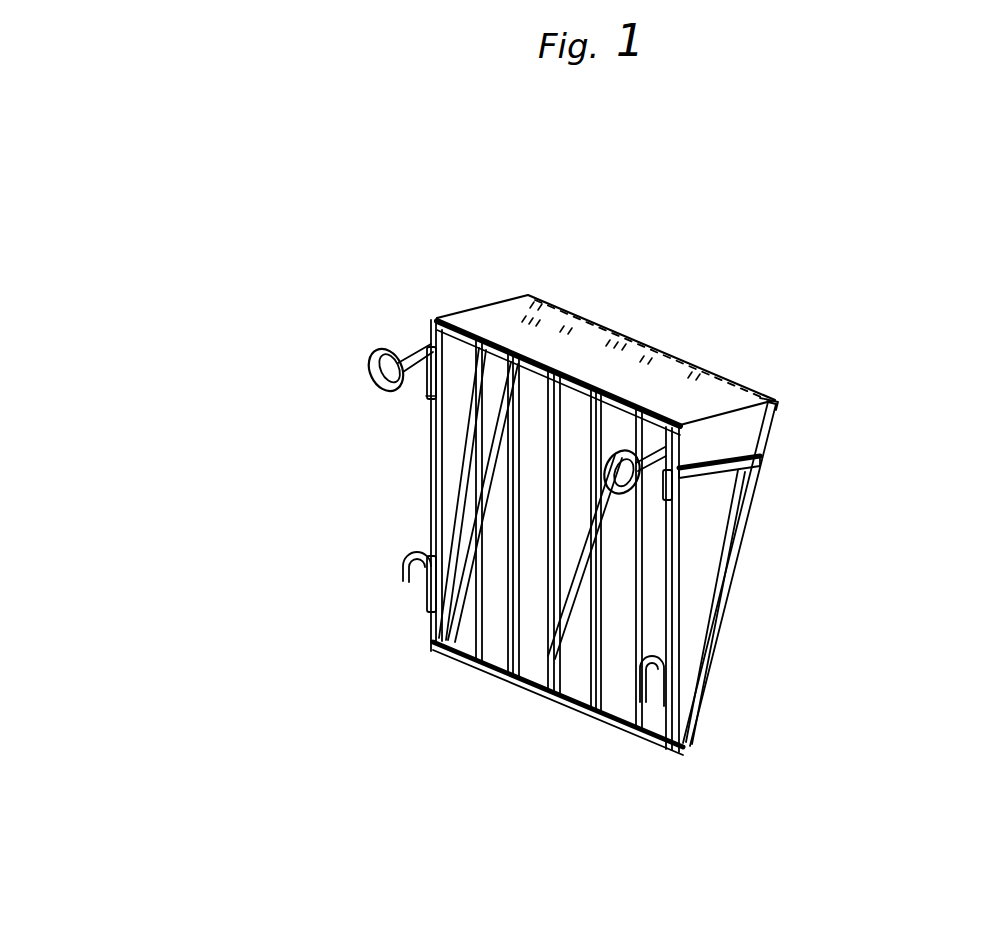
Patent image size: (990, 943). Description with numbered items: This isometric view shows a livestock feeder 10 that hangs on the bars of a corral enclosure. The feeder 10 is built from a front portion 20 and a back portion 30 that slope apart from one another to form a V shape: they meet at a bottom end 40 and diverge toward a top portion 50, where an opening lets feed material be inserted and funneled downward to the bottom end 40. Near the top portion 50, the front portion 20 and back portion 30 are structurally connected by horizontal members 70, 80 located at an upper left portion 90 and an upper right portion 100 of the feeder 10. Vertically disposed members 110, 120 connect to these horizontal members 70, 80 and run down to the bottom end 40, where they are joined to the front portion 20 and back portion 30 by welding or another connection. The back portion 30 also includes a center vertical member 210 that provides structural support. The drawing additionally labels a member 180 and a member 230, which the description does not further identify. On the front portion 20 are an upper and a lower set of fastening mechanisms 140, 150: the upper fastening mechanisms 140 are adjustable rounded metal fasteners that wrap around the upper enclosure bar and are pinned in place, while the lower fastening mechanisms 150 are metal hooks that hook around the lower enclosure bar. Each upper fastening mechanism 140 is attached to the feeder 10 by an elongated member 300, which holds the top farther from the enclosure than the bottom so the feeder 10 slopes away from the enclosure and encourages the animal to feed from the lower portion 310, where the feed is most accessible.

The livestock feeder 10 is at (871, 117).
The front portion 20 is at (425, 512).
The back portion 30 is at (745, 614).
The bottom end 40 is at (692, 742).
The top portion 50 is at (782, 410).
The horizontal member 70 is at (433, 316).
The horizontal member 80 is at (766, 442).
The upper left portion 90 is at (428, 416).
The upper right portion 100 is at (762, 473).
The vertically disposed member 110 is at (465, 440).
The vertically disposed member 120 is at (760, 536).
The upper fastening mechanism 140 is at (378, 362).
The lower fastening mechanism 150 is at (402, 566).
The vertical stud 180 is at (540, 650).
The center vertical member 210 is at (548, 634).
The top plate 230 is at (497, 328).
The elongated member 300 is at (417, 347).
The lower portion 310 is at (607, 652).